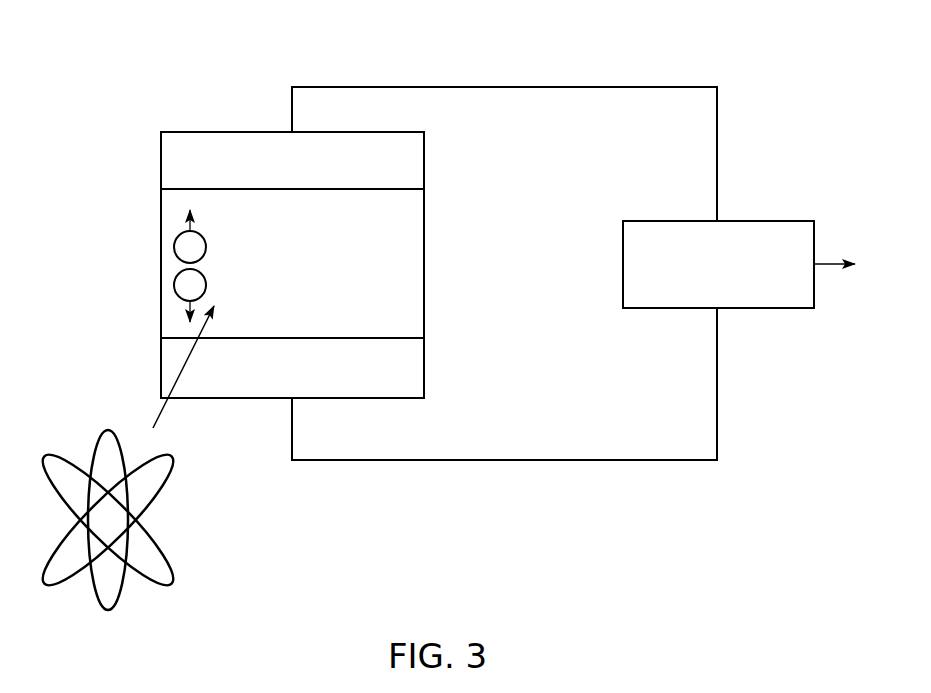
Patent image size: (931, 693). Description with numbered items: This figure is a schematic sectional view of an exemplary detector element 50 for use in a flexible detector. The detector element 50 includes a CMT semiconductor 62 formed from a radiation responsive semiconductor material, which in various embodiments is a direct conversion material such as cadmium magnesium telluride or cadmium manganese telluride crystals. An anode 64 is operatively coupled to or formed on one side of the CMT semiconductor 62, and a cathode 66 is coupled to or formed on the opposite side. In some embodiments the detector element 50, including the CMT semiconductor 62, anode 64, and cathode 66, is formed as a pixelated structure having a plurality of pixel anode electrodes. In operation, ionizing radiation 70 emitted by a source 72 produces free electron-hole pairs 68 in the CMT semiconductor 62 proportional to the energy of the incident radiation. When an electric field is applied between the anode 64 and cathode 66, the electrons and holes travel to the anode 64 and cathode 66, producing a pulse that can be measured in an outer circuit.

The detector element 50 is at (124, 52).
The CMT semiconductor 62 is at (160, 232).
The anode 64 is at (160, 161).
The cathode 66 is at (160, 371).
The electron-hole pairs 68 is at (148, 261).
The ionizing radiation 70 is at (164, 414).
The source 72 is at (168, 552).